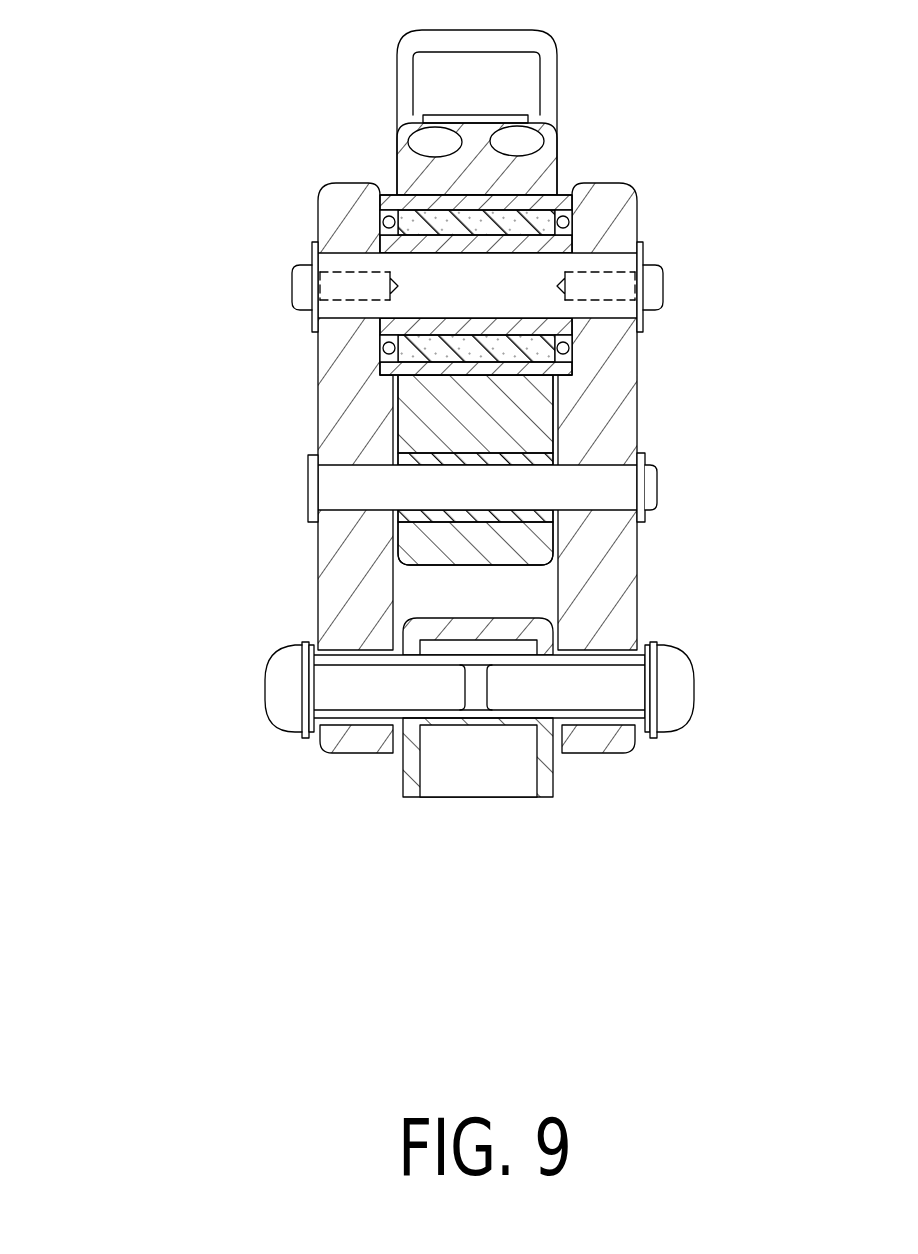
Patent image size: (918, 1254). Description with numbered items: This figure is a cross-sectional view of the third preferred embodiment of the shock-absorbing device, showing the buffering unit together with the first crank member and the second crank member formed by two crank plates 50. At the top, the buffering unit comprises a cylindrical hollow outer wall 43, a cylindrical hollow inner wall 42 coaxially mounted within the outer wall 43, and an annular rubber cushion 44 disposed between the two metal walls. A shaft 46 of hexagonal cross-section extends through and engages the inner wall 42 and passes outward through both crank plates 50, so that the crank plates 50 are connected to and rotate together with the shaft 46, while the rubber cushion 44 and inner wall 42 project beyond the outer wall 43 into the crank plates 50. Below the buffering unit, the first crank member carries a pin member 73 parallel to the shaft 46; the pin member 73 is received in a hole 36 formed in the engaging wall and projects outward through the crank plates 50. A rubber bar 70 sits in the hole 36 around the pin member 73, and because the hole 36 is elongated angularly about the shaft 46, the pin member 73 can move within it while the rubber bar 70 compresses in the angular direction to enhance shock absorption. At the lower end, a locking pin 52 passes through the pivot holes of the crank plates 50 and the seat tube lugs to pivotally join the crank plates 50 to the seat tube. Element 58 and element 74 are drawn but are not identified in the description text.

The hole 36 is at (497, 530).
The inner wall 42 is at (574, 212).
The outer wall 43 is at (540, 208).
The rubber cushion 44 is at (425, 218).
The shaft 46 is at (603, 260).
The crank plates 50 is at (292, 574).
The locking pin 52 is at (282, 695).
The hub 58 is at (590, 463).
The rubber bar 70 is at (420, 428).
The pin member 73 is at (604, 500).
The pivot pin 74 is at (313, 485).